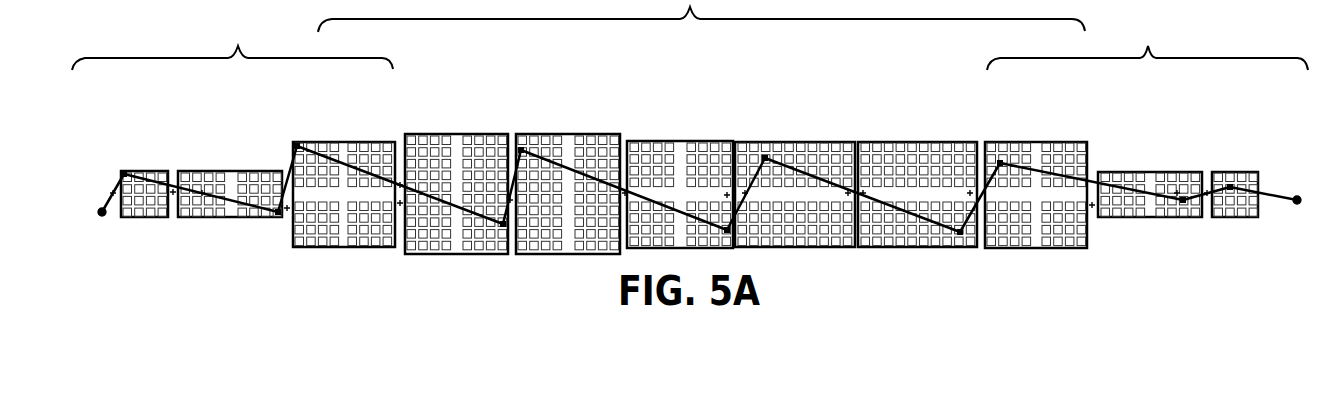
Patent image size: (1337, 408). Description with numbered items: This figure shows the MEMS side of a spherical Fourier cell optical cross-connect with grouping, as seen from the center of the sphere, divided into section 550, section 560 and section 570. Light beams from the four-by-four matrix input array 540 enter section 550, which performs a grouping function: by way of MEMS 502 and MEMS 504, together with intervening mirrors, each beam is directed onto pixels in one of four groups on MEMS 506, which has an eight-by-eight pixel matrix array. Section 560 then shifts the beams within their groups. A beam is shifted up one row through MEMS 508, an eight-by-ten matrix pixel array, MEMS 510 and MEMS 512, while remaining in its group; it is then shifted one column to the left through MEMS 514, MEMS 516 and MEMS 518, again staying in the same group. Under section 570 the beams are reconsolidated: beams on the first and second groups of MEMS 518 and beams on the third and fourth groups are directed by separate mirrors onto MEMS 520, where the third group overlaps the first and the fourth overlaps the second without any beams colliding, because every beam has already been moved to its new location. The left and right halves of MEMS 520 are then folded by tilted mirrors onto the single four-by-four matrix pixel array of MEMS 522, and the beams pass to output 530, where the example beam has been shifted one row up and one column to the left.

The MEMS 502 is at (148, 170).
The MEMS 504 is at (233, 170).
The MEMS 506 is at (345, 141).
The MEMS 508 is at (458, 133).
The MEMS 510 is at (571, 133).
The MEMS 512 is at (683, 140).
The MEMS 514 is at (797, 141).
The MEMS 516 is at (918, 141).
The MEMS 518 is at (1039, 141).
The MEMS 520 is at (1148, 171).
The MEMS 522 is at (1238, 171).
The output 530 is at (1287, 228).
The matrix input array 540 is at (75, 222).
The section 550 is at (232, 47).
The section 560 is at (701, 16).
The section 570 is at (1147, 47).